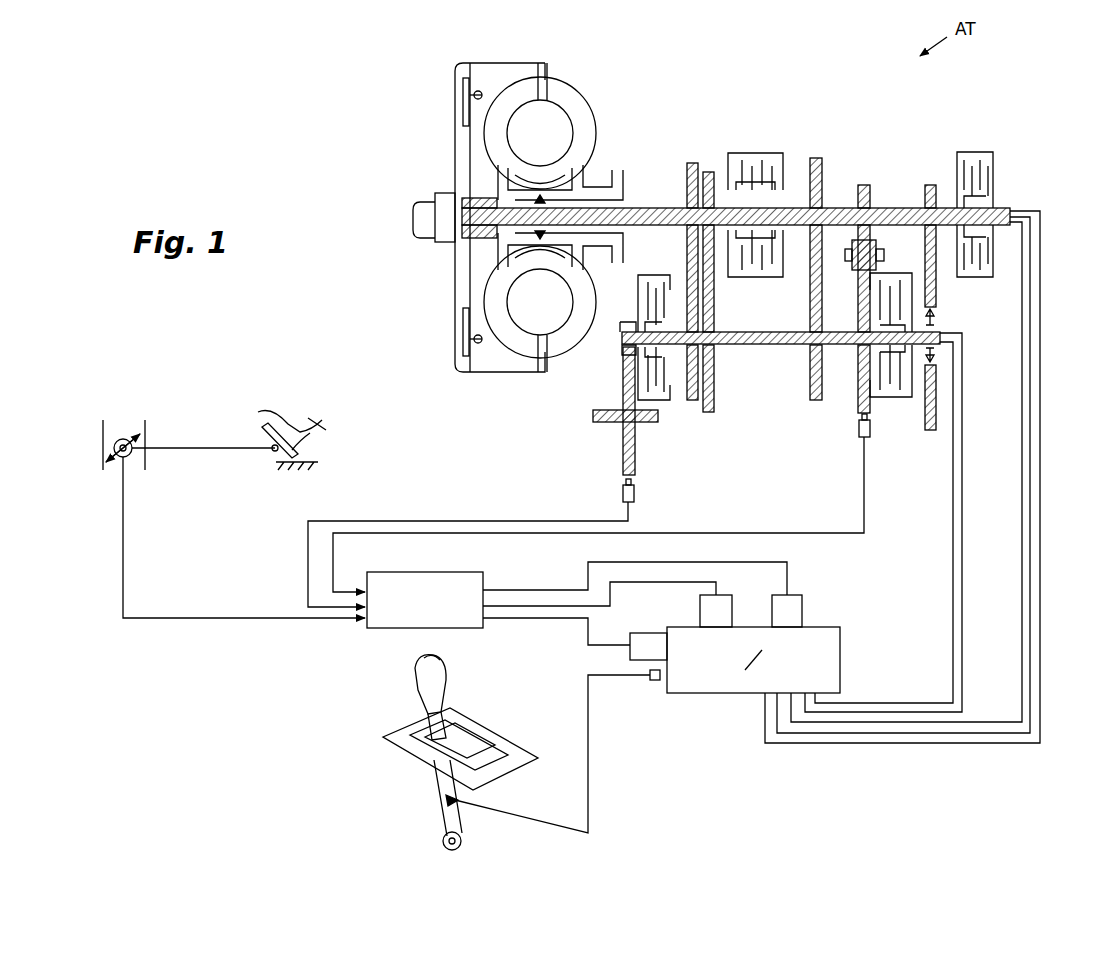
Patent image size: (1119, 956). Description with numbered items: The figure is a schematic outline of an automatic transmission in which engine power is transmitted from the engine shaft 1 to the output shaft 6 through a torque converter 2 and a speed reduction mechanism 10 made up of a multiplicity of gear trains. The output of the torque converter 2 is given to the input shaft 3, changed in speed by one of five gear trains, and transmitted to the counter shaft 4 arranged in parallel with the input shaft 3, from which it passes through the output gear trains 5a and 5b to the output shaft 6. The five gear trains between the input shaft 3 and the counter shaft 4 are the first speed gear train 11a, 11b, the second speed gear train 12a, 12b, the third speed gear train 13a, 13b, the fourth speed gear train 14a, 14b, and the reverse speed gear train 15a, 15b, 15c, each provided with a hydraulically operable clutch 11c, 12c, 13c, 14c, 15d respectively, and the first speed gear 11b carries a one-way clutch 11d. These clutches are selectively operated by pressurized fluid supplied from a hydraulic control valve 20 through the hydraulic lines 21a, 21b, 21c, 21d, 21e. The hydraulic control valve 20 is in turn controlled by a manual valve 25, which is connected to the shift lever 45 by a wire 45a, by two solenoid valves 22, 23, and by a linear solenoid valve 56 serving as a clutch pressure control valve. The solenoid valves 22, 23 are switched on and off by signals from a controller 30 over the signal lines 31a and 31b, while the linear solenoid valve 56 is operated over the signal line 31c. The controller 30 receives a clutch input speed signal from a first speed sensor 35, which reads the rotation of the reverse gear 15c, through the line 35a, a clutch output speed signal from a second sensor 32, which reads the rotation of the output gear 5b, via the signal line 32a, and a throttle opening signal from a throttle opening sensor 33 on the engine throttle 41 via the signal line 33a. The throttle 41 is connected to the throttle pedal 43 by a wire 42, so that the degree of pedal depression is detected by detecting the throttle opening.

The engine shaft 1 is at (415, 238).
The torque converter 2 is at (578, 80).
The input shaft 3 is at (640, 208).
The counter shaft 4 is at (768, 348).
The output gear train 5a is at (622, 342).
The output gear 5b is at (623, 372).
The output shaft 6 is at (602, 422).
The speed reduction mechanism 10 is at (766, 130).
The first speed gear 11a is at (928, 183).
The first speed gear 11b is at (937, 290).
The hydraulic clutch 11c is at (978, 150).
The one-way clutch 11d is at (935, 322).
The second speed gear 12a is at (707, 170).
The second speed gear 12b is at (714, 405).
The hydraulic clutch 12c is at (735, 278).
The third speed gear 13a is at (687, 170).
The third speed gear 13b is at (693, 403).
The hydraulic clutch 13c is at (663, 403).
The fourth speed gear 14a is at (822, 162).
The fourth speed gear 14b is at (812, 400).
The hydraulic clutch 14c is at (784, 156).
The reverse speed gear 15a is at (862, 190).
The reverse speed gear 15b is at (878, 256).
The reverse gear 15c is at (860, 405).
The hydraulic clutch 15d is at (890, 400).
The hydraulic control valve 20 is at (842, 648).
The hydraulic line 21a is at (873, 702).
The hydraulic line 21b is at (963, 675).
The hydraulic line 21c is at (1020, 626).
The hydraulic line 21d is at (1032, 604).
The hydraulic line 21e is at (1042, 652).
The solenoid valve 22 is at (722, 596).
The solenoid valve 23 is at (800, 596).
The manual valve 25 is at (657, 682).
The controller 30 is at (440, 580).
The signal line 31a is at (541, 583).
The signal line 31b is at (505, 606).
The signal line 31c is at (560, 618).
The second sensor 32 is at (636, 495).
The signal line 32a is at (545, 521).
The throttle opening sensor 33 is at (117, 458).
The signal line 33a is at (124, 552).
The first speed sensor 35 is at (858, 437).
The line 35a is at (722, 533).
The engine throttle 41 is at (130, 440).
The wire 42 is at (212, 448).
The throttle pedal 43 is at (262, 420).
The shift lever 45 is at (442, 702).
The wire 45a is at (590, 720).
The linear solenoid valve 56 is at (648, 633).